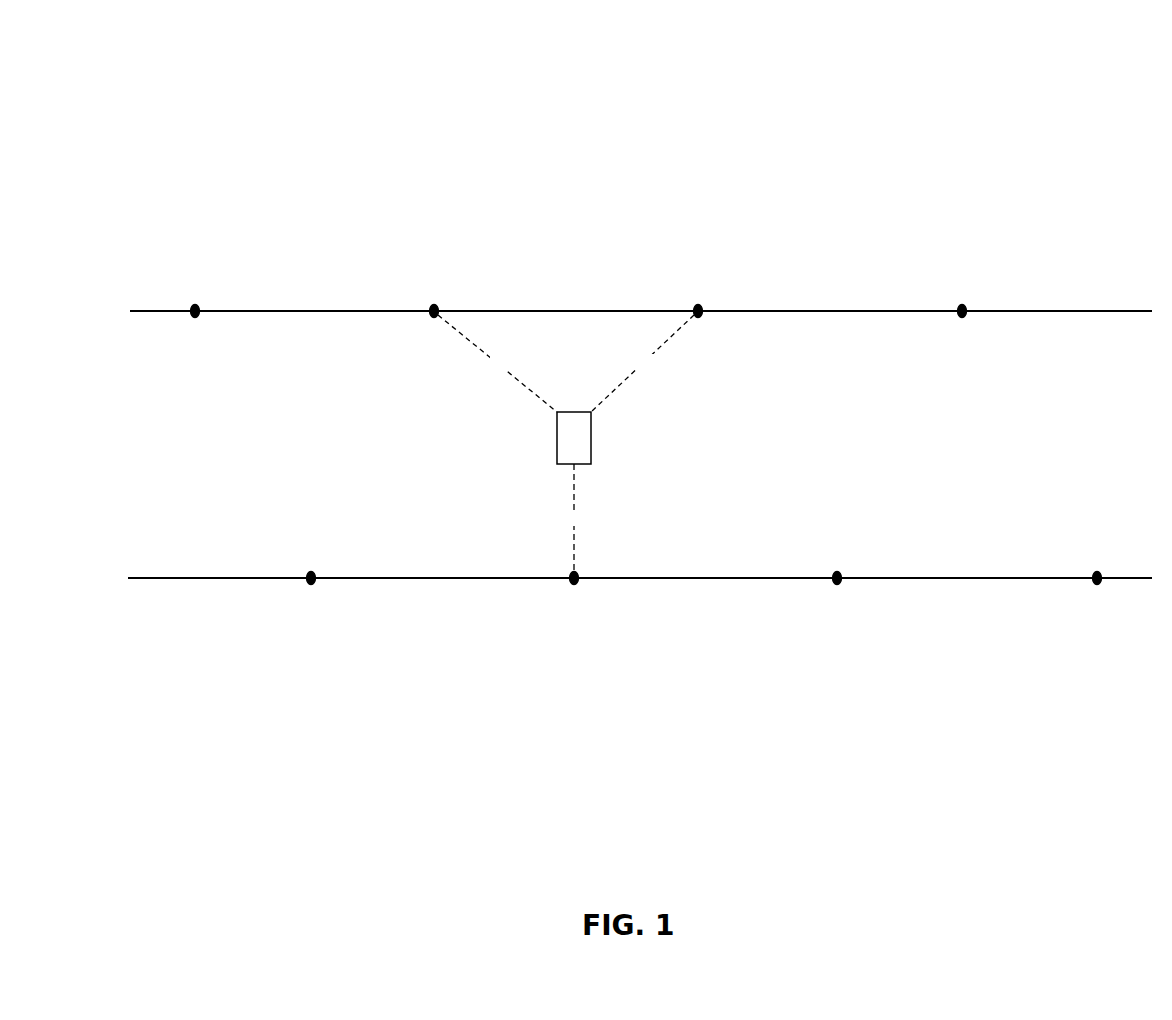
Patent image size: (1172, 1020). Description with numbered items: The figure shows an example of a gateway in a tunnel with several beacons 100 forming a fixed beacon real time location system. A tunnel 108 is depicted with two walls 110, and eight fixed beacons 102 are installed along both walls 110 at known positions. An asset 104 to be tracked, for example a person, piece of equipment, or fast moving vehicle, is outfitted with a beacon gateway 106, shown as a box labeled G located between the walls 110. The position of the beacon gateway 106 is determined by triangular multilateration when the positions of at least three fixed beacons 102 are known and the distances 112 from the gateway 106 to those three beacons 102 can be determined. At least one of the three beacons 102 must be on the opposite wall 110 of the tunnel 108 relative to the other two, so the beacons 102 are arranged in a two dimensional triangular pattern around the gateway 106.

The gateway in a tunnel with several beacons 100 is at (813, 66).
The fixed beacon 102 is at (200, 311).
The asset 104 is at (574, 470).
The beacon gateway 106 is at (557, 438).
The tunnel 108 is at (118, 450).
The wall 110 is at (140, 311).
The distance 112 is at (490, 366).